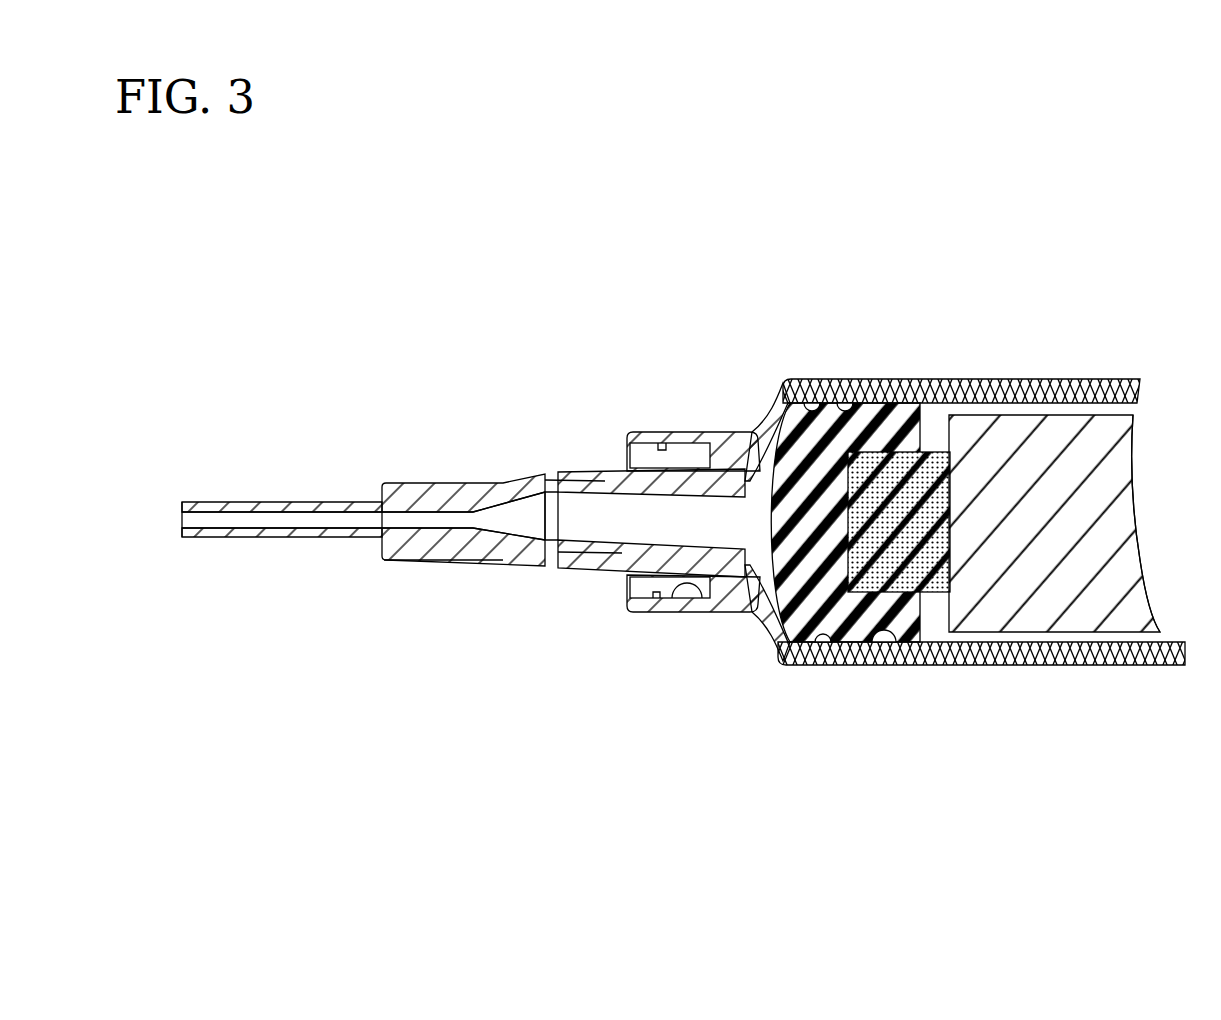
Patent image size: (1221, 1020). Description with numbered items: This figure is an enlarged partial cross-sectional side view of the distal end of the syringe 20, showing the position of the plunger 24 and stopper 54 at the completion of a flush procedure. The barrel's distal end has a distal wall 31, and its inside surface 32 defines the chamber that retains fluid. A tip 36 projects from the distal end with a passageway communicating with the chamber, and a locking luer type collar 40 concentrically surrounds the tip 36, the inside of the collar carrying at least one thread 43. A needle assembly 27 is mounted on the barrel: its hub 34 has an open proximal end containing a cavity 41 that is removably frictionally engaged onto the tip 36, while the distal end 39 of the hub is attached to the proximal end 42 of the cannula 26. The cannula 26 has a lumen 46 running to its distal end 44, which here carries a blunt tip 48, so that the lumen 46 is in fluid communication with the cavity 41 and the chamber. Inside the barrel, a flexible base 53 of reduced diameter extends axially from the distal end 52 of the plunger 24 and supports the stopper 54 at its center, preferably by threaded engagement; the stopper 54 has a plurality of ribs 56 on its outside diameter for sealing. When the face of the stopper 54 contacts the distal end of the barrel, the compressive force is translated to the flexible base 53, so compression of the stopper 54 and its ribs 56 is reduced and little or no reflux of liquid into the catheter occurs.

The syringe 20 is at (1100, 672).
The plunger 24 is at (1115, 433).
The cannula 26 is at (263, 537).
The needle assembly 27 is at (445, 483).
The distal wall 31 is at (795, 402).
The inside surface 32 is at (1050, 405).
The hub 34 is at (534, 560).
The tip 36 is at (600, 575).
The distal end of hub 39 is at (397, 565).
The locking luer type collar 40 is at (686, 432).
The cavity 41 is at (535, 492).
The proximal end of cannula 42 is at (362, 498).
The thread 43 is at (673, 590).
The distal end of cannula 44 is at (215, 500).
The lumen 46 is at (267, 513).
The blunt tip 48 is at (183, 502).
The distal end of plunger 52 is at (973, 634).
The flexible base 53 is at (876, 455).
The stopper 54 is at (836, 408).
The ribs 56 is at (897, 643).